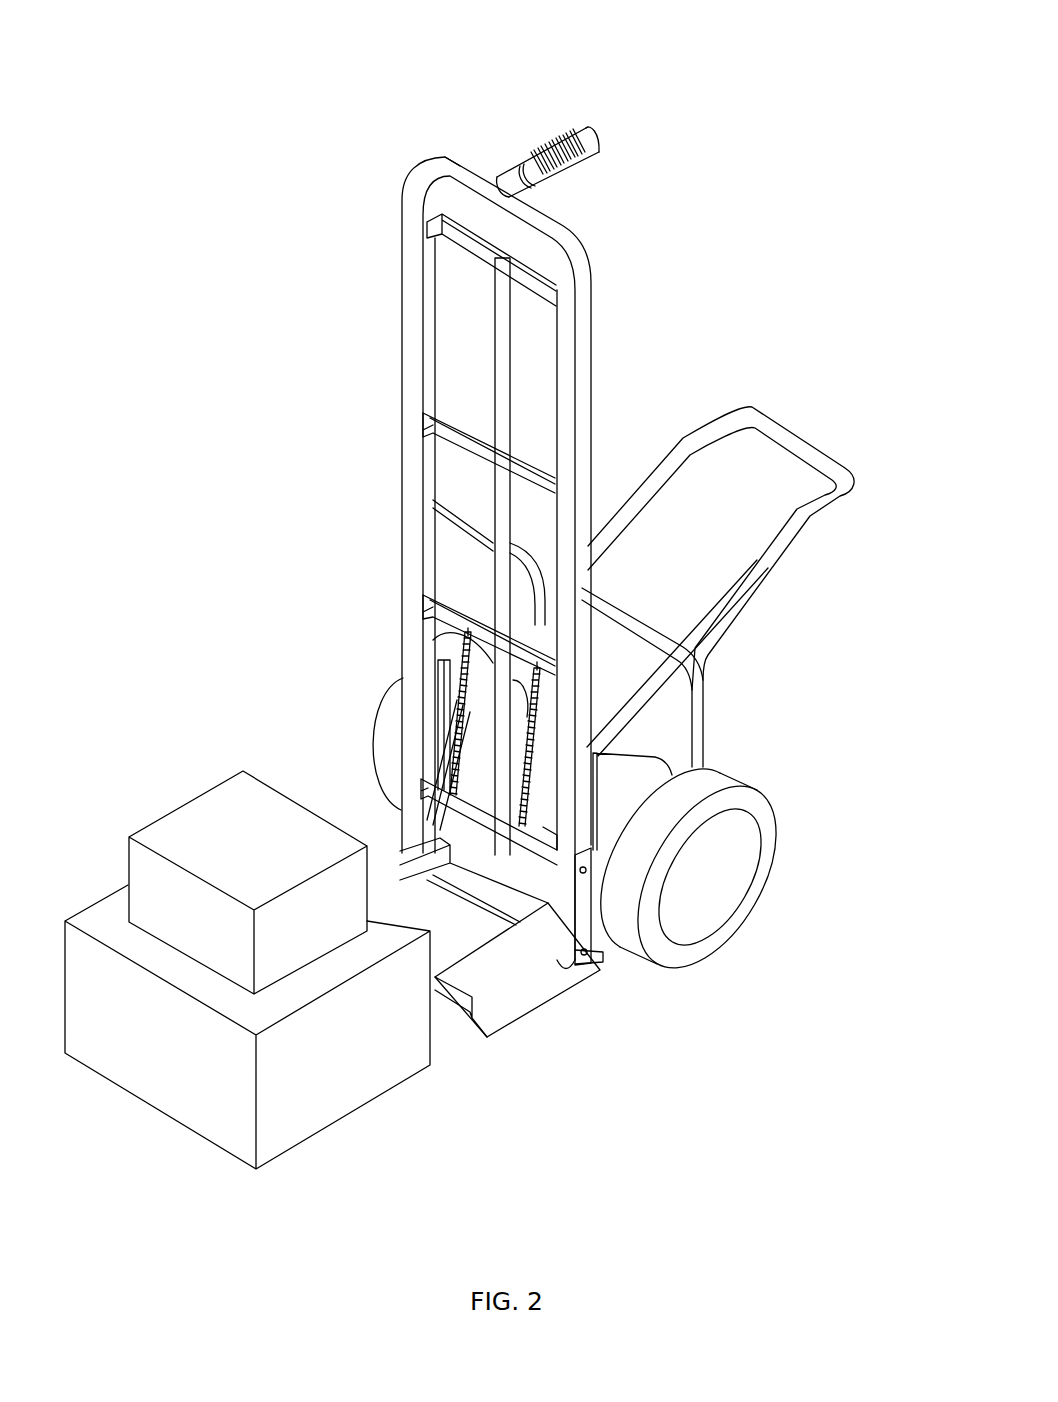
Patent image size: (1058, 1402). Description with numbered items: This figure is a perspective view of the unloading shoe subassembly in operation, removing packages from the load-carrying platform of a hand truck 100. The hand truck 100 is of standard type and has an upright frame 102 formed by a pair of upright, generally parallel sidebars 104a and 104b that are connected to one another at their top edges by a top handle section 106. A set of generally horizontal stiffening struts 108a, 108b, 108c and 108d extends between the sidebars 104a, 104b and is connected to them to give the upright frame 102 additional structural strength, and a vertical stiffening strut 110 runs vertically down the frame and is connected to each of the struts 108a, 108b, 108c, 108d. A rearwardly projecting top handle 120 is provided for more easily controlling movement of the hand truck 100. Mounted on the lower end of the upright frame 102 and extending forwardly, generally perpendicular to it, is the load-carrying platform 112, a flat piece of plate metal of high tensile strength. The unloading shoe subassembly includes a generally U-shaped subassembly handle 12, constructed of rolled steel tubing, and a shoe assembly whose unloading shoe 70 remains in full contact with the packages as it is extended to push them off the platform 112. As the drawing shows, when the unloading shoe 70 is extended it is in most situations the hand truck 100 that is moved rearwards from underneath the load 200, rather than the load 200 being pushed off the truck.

The hand truck 100 is at (386, 272).
The upright frame 102 is at (574, 360).
The upright sidebar 104a is at (402, 320).
The upright sidebar 104b is at (571, 296).
The top handle section 106 is at (448, 165).
The top handle 120 is at (556, 127).
The stiffening strut 108a is at (525, 280).
The stiffening strut 108b is at (440, 414).
The stiffening strut 108c is at (430, 610).
The stiffening strut 108d is at (537, 850).
The vertical stiffening strut 110 is at (503, 498).
The subassembly handle 12 is at (783, 551).
The load-carrying platform 112 is at (510, 997).
The unloading shoe 70 is at (452, 1000).
The load 200 is at (190, 1065).